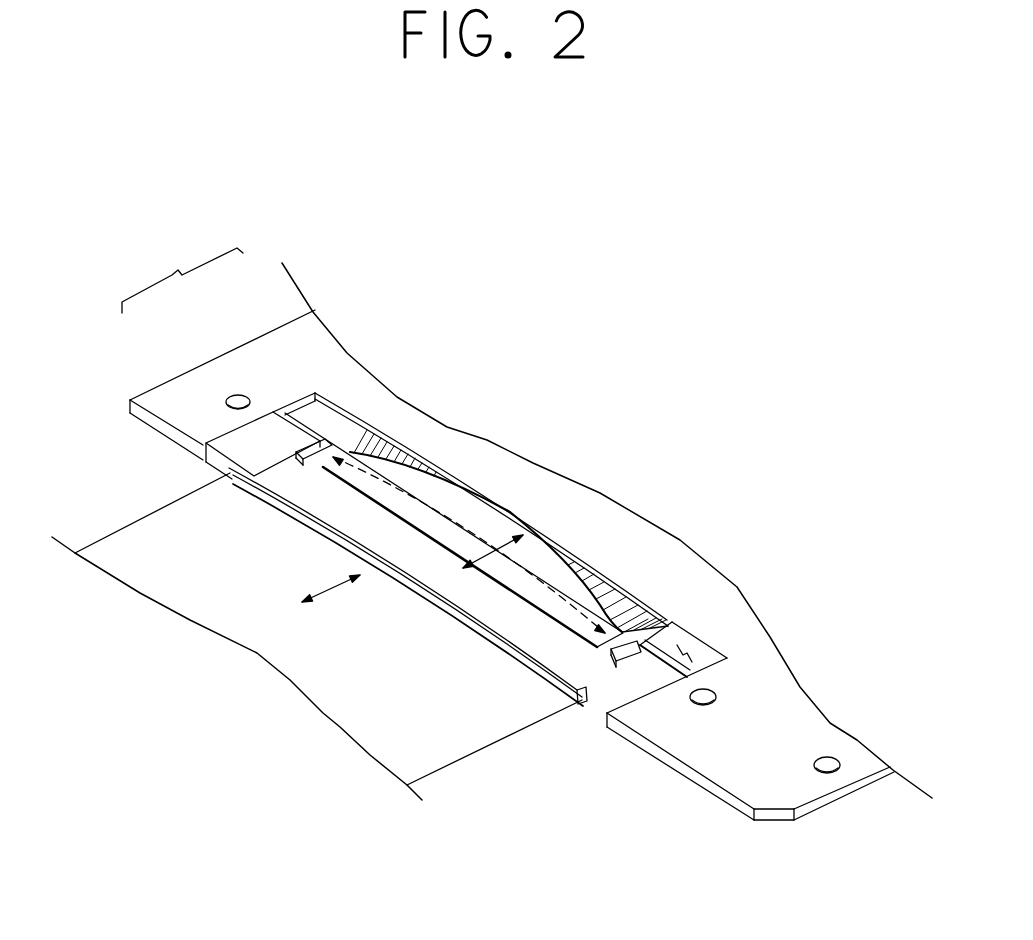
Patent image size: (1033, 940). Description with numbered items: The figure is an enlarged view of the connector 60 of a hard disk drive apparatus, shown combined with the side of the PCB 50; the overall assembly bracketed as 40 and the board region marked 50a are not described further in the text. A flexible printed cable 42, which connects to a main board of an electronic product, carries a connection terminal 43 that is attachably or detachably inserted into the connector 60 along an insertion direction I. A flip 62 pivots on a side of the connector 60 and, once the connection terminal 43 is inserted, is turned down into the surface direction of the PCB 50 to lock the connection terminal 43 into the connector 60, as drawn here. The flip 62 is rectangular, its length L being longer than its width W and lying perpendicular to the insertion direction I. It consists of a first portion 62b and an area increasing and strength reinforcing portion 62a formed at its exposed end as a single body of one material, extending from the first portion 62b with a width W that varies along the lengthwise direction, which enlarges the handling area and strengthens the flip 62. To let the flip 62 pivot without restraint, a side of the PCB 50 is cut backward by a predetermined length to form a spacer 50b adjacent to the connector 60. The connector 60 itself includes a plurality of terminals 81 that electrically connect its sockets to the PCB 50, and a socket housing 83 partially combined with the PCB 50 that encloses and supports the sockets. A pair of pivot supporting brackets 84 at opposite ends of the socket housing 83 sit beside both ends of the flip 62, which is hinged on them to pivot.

The connecting portion 40 is at (182, 276).
The flexible printed cable 42 is at (440, 748).
The connection terminal 43 is at (582, 707).
The PCB 50 is at (307, 340).
The plate surface 50a is at (677, 645).
The spacer 50b is at (673, 623).
The connector 60 is at (208, 428).
The flip 62 is at (443, 545).
The area increasing and strength reinforcing portion 62a is at (447, 507).
The first portion 62b is at (313, 473).
The terminals 81 is at (573, 563).
The socket housing 83 is at (205, 458).
The pivot supporting brackets 84 is at (622, 660).
The length L is at (383, 492).
The width W is at (527, 533).
The insertion direction I is at (331, 582).